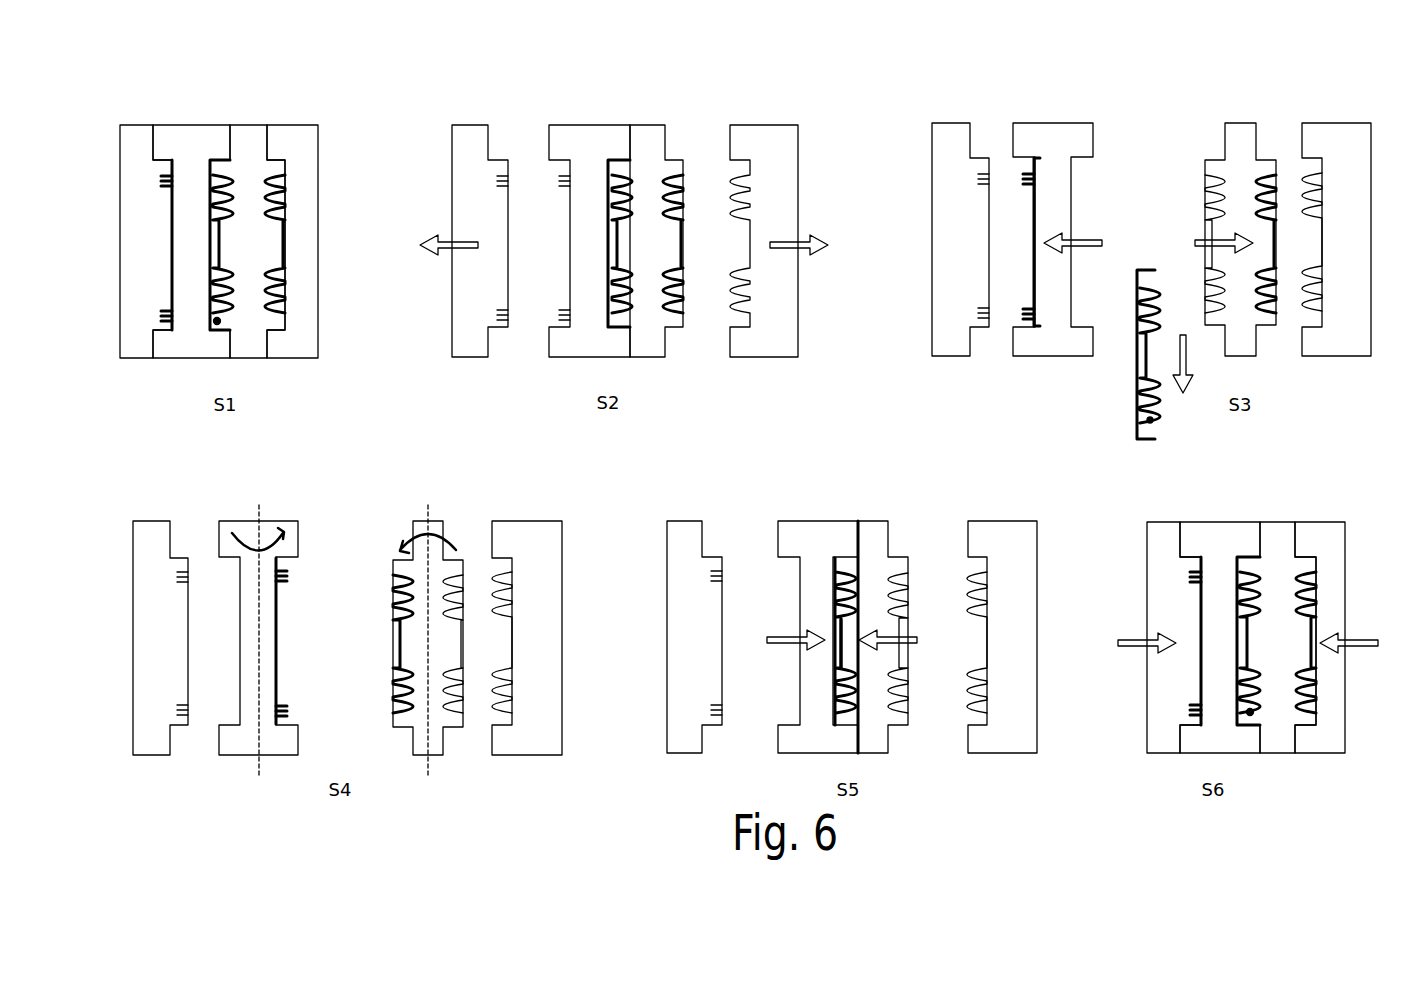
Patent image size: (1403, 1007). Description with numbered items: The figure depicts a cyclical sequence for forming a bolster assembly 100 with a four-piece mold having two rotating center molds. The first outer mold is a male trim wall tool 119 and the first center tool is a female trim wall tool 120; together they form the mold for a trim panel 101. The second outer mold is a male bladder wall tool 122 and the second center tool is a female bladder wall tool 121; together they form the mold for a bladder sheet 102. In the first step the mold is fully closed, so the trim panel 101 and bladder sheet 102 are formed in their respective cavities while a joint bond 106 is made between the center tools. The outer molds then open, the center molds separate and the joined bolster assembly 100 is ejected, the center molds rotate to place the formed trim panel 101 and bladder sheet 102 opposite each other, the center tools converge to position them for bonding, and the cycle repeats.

The bolster assembly 100 is at (1116, 421).
The trim panel 101 is at (215, 250).
The bladder sheet 102 is at (222, 253).
The joint bond 106 is at (222, 323).
The male trim wall tool 119 is at (132, 145).
The female trim wall tool 120 is at (186, 145).
The female bladder wall tool 121 is at (255, 145).
The male bladder wall tool 122 is at (292, 145).